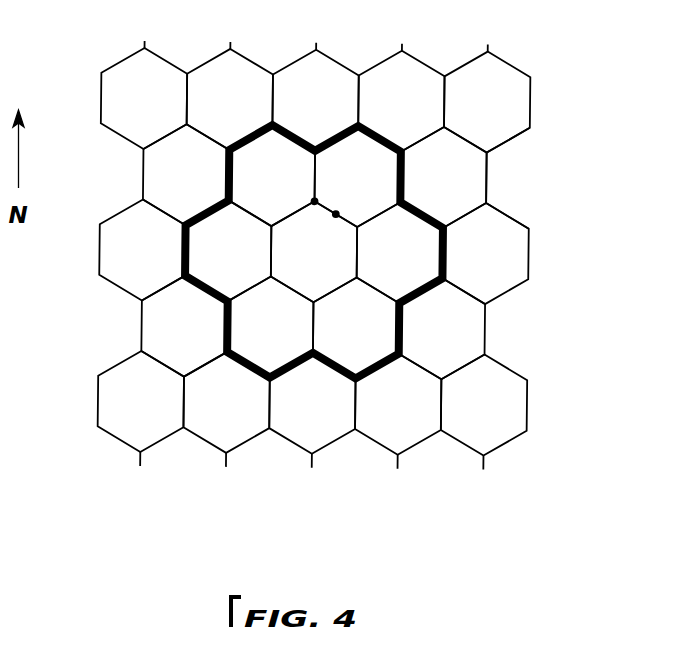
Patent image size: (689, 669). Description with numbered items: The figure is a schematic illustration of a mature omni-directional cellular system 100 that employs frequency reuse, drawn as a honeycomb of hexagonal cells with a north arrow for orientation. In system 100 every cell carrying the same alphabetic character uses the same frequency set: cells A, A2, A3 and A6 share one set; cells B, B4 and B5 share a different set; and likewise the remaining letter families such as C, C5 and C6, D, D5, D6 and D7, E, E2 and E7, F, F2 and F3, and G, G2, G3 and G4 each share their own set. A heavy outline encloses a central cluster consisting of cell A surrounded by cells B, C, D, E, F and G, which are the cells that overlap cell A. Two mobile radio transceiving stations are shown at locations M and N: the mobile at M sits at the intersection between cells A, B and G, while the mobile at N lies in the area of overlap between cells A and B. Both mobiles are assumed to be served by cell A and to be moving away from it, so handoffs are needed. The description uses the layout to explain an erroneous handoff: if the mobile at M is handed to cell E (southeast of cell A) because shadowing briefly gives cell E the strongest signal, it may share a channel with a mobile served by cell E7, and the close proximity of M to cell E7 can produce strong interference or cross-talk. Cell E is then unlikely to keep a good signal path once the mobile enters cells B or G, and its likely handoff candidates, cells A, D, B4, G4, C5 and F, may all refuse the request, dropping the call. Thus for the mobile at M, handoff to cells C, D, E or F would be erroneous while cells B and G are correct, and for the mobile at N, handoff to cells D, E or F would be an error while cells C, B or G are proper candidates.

The omni directional cellular system 100 is at (379, 256).
The cell A is at (314, 252).
The cell B is at (357, 177).
The cell C is at (399, 253).
The cell D is at (356, 328).
The cell E is at (270, 327).
The cell F is at (228, 251).
The cell G is at (271, 176).
The mobile transceiver location M is at (325, 192).
The mobile transceiver location N is at (339, 211).
The cell A6 is at (144, 99).
The cell C6 is at (229, 99).
The cell E7 is at (315, 100).
The cell D7 is at (401, 101).
The cell G2 is at (487, 102).
The cell D6 is at (186, 175).
The cell F2 is at (443, 177).
The cell A2 is at (513, 178).
The cell B5 is at (142, 250).
The cell E2 is at (485, 254).
The cell C5 is at (184, 326).
The cell G3 is at (441, 329).
The cell D5 is at (140, 402).
The cell G4 is at (226, 402).
The cell B4 is at (312, 403).
The cell F3 is at (398, 404).
The cell A3 is at (484, 405).